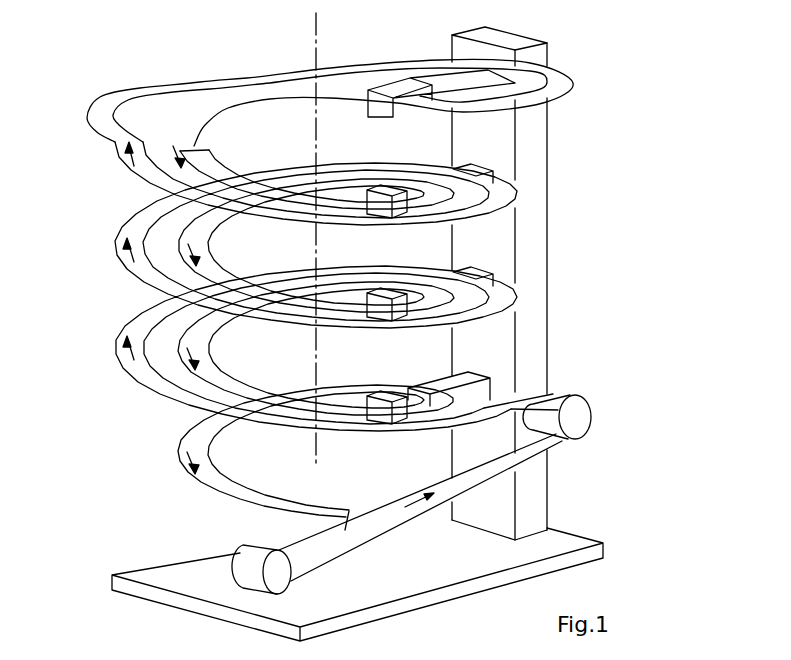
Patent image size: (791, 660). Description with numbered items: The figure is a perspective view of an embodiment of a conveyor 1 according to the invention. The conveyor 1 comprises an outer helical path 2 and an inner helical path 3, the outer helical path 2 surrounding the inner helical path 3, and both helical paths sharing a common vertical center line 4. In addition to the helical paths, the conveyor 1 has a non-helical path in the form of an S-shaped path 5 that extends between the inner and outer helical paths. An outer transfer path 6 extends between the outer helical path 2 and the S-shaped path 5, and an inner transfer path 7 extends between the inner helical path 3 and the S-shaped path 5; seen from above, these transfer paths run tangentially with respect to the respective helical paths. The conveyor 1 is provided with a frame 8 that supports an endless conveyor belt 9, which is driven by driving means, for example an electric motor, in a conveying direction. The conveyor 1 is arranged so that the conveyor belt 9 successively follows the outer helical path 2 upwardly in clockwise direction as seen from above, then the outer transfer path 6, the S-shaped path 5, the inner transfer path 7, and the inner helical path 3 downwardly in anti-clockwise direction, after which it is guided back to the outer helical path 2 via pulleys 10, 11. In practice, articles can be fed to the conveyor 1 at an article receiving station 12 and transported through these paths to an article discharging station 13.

The conveyor 1 is at (594, 58).
The outer helical path 2 is at (122, 342).
The inner helical path 3 is at (213, 320).
The common vertical center line 4 is at (317, 50).
The S-shaped path 5 is at (100, 107).
The outer transfer path 6 is at (423, 62).
The inner transfer path 7 is at (200, 178).
The frame 8 is at (530, 320).
The endless conveyor belt 9 is at (503, 295).
The pulley 10 is at (277, 572).
The pulley 11 is at (575, 410).
The article receiving station 12 is at (560, 392).
The article discharging station 13 is at (257, 548).